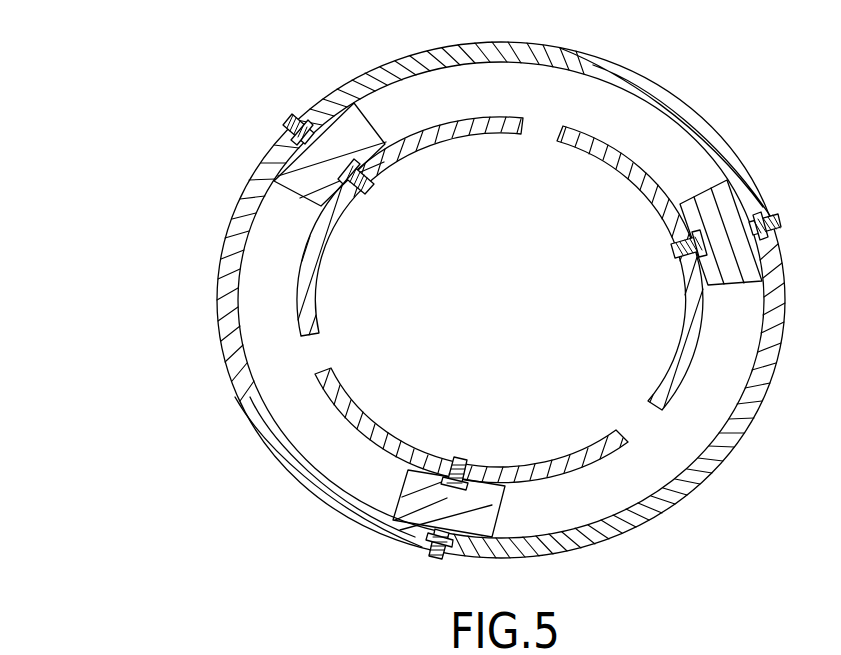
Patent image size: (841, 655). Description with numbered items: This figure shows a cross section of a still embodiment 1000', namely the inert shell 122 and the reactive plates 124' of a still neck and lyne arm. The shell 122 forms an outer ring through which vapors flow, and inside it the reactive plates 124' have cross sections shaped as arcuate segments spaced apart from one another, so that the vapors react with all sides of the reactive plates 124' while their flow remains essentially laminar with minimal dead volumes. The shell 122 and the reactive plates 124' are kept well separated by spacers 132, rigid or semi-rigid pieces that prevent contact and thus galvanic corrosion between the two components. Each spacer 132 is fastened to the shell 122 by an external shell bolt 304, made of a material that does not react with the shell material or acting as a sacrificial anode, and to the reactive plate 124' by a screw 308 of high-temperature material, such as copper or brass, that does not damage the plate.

The still embodiment 1000' is at (411, 291).
The shell 122 is at (663, 101).
The reactive plates 124' is at (500, 300).
The spacer 132 is at (343, 138).
The external shell bolt 304 is at (289, 114).
The screw 308 is at (378, 182).